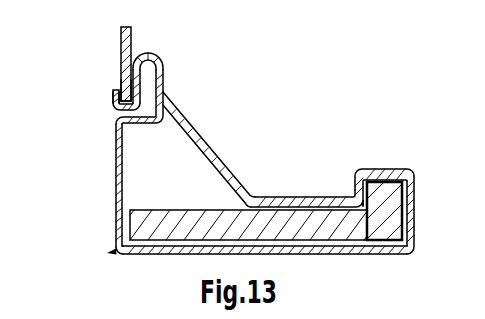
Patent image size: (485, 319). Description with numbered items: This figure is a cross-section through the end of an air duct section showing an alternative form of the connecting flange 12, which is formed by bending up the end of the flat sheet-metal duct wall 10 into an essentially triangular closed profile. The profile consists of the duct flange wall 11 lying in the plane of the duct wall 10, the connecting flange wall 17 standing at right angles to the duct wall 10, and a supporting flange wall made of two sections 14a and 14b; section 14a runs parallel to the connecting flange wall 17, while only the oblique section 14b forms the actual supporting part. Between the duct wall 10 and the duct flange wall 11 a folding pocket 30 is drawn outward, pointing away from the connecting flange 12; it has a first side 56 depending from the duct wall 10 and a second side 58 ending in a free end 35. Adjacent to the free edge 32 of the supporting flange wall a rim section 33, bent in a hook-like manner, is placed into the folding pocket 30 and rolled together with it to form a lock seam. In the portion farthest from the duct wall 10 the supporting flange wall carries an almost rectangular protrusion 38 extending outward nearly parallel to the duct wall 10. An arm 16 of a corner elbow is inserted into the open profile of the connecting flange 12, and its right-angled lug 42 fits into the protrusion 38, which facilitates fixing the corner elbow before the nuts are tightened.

The duct wall 10 is at (121, 39).
The duct flange wall 11 is at (116, 192).
The connecting flange 12 is at (110, 252).
The supporting flange wall section 14a is at (310, 198).
The supporting flange wall section 14b is at (205, 140).
The arm 16 is at (199, 235).
The connecting flange wall 17 is at (323, 255).
The folding pocket 30 is at (115, 119).
The free edge 32 is at (113, 103).
The rim section 33 is at (121, 81).
The free end 35 is at (141, 87).
The protrusion 38 is at (382, 170).
The lug 42 is at (389, 202).
The first side 56 is at (115, 96).
The second side 58 is at (165, 79).